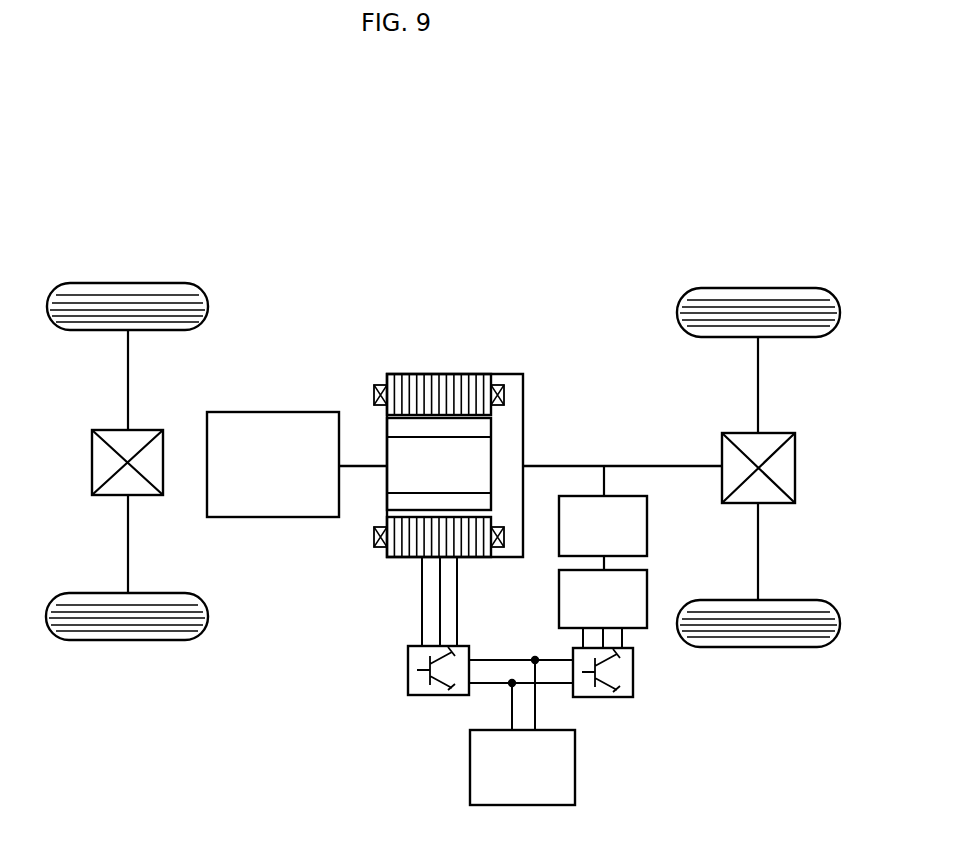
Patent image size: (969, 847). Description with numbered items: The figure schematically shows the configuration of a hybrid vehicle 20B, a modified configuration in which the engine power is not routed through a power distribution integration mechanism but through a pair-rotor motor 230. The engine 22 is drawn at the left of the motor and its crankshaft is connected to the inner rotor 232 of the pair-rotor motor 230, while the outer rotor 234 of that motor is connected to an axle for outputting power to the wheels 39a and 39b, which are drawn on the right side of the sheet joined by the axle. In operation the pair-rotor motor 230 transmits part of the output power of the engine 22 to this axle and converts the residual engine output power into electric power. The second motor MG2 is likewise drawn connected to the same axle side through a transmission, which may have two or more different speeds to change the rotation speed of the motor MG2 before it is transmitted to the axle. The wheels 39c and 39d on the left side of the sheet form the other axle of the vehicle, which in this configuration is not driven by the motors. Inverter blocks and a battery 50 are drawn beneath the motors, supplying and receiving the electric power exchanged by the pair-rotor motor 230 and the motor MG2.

The hybrid vehicle 20B is at (562, 184).
The engine 22 is at (274, 517).
The pair-rotor motor 230 is at (537, 243).
The inner rotor 232 is at (492, 465).
The outer rotor 234 is at (401, 372).
The wheel 39a is at (760, 288).
The wheel 39b is at (760, 647).
The wheel 39c is at (128, 283).
The wheel 39d is at (128, 640).
The battery 50 is at (575, 762).
The motor MG2 is at (558, 599).